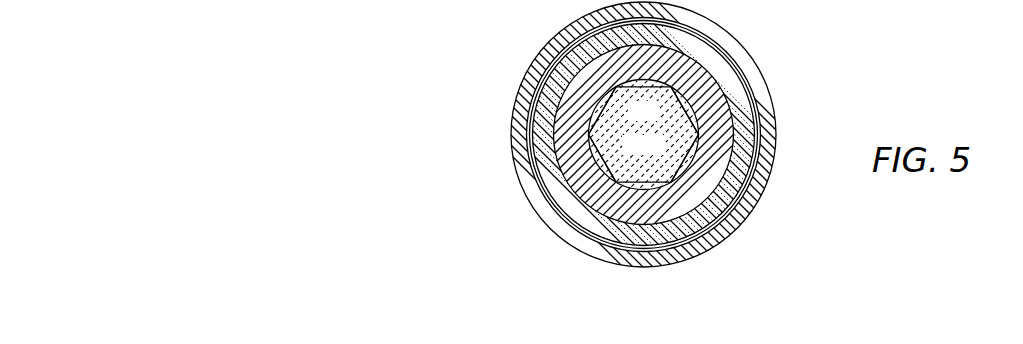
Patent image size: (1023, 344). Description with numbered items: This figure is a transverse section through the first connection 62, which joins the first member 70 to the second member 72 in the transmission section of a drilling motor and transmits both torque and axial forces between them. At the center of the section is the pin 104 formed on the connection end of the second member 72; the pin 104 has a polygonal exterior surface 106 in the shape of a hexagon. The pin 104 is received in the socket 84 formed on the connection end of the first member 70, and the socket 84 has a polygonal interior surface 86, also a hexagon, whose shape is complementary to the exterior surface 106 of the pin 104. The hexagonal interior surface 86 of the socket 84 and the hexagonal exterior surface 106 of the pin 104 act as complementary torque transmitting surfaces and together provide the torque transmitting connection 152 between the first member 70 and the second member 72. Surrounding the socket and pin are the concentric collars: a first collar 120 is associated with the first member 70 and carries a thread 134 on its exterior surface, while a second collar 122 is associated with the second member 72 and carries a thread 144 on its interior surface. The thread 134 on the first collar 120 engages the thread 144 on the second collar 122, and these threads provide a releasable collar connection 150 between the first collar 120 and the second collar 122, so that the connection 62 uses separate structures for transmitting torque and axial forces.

The first connection 62 is at (742, 236).
The first member 70 is at (660, 69).
The second member 72 is at (660, 124).
The socket 84 is at (592, 119).
The polygonal interior surface 86 is at (590, 146).
The pin 104 is at (666, 158).
The polygonal exterior surface 106 is at (697, 144).
The first collar 120 is at (757, 70).
The second collar 122 is at (525, 179).
The thread 134 is at (538, 76).
The thread 144 is at (742, 203).
The releasable collar connection 150 is at (753, 183).
The torque transmitting connection 152 is at (594, 90).